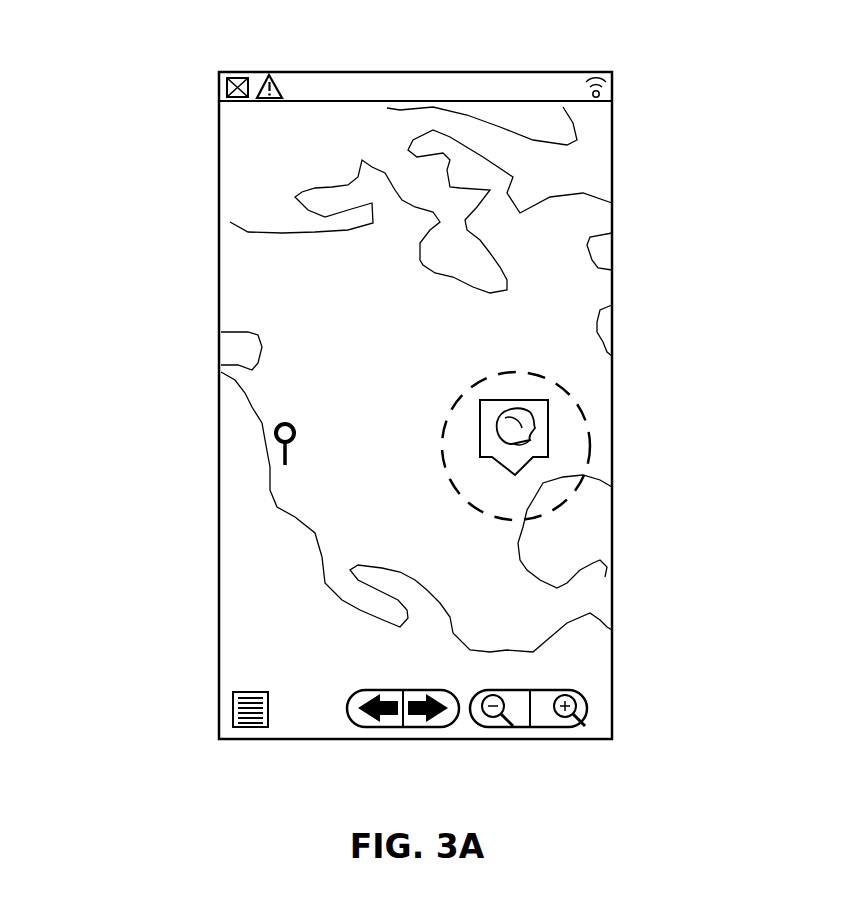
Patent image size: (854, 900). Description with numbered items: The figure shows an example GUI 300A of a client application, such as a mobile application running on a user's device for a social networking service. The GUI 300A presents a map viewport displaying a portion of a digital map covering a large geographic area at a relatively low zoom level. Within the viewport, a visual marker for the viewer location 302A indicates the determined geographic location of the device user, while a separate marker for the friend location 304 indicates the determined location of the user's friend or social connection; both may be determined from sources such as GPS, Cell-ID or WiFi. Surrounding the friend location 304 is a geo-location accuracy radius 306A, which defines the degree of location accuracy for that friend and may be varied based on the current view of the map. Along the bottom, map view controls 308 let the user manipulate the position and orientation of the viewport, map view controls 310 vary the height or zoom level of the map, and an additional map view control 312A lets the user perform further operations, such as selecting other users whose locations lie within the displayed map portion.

The GUI 300A is at (655, 58).
The viewer location 302A is at (280, 420).
The friend location 304 is at (520, 472).
The accuracy radius 306A is at (582, 493).
The map view controls 308 is at (396, 688).
The map view controls 310 is at (596, 704).
The map view control 312A is at (230, 713).